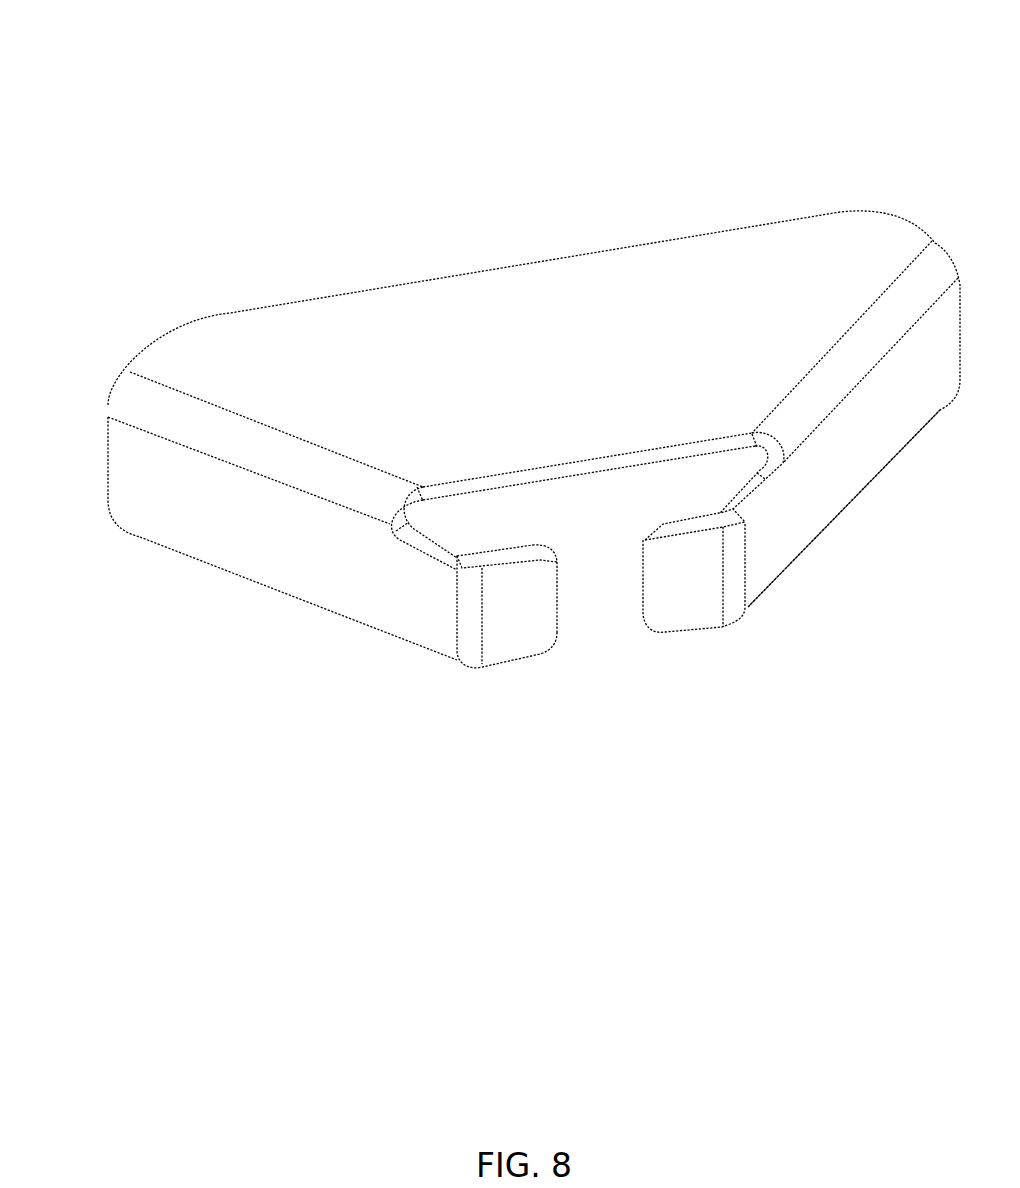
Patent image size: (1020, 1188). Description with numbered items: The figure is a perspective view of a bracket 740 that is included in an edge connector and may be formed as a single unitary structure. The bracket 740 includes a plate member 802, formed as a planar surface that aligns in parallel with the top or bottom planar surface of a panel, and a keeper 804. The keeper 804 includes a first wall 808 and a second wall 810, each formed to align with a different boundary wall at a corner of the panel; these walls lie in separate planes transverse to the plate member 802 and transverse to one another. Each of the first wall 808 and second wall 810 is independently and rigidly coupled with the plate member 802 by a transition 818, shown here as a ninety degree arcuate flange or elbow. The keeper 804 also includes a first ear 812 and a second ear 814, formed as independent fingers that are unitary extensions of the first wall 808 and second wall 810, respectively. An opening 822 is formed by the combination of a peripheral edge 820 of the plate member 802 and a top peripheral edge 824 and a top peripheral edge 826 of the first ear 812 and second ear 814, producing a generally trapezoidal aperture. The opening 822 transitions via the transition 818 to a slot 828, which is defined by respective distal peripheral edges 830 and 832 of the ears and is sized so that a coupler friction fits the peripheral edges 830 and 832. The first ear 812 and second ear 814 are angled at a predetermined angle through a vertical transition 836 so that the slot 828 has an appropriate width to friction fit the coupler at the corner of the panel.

The bracket 740 is at (646, 100).
The plate member 802 is at (530, 353).
The keeper 804 is at (85, 447).
The first wall 808 is at (257, 537).
The second wall 810 is at (860, 433).
The first ear 812 is at (520, 605).
The second ear 814 is at (688, 582).
The transition 818 is at (130, 390).
The peripheral edge 820 is at (500, 482).
The opening 822 is at (705, 476).
The top peripheral edge 824 is at (498, 553).
The top peripheral edge 826 is at (683, 516).
The slot 828 is at (610, 634).
The distal peripheral edge 830 is at (560, 587).
The distal peripheral edge 832 is at (645, 570).
The vertical transition 836 is at (463, 618).